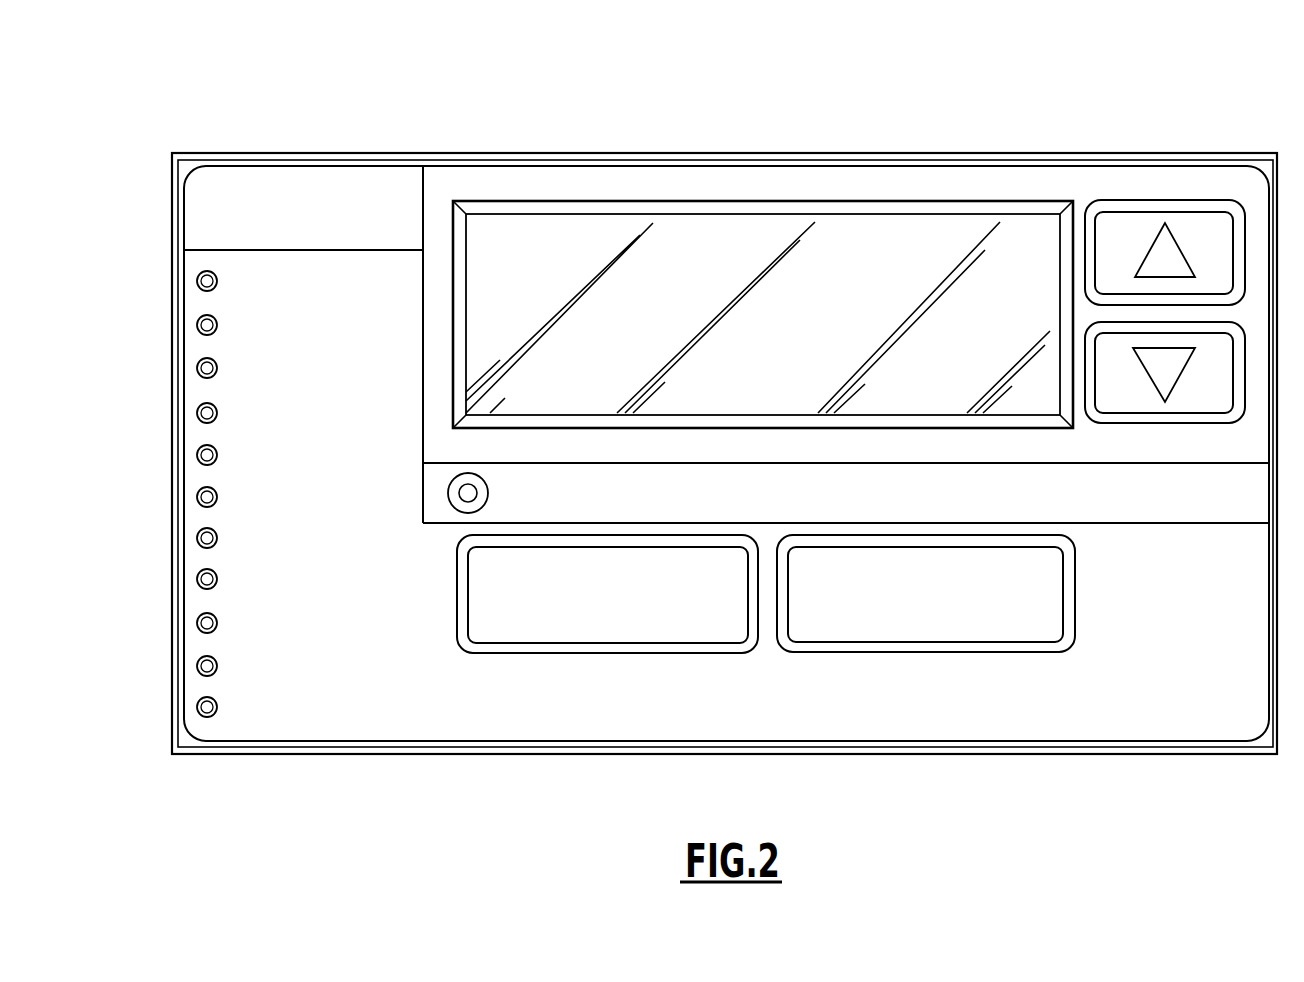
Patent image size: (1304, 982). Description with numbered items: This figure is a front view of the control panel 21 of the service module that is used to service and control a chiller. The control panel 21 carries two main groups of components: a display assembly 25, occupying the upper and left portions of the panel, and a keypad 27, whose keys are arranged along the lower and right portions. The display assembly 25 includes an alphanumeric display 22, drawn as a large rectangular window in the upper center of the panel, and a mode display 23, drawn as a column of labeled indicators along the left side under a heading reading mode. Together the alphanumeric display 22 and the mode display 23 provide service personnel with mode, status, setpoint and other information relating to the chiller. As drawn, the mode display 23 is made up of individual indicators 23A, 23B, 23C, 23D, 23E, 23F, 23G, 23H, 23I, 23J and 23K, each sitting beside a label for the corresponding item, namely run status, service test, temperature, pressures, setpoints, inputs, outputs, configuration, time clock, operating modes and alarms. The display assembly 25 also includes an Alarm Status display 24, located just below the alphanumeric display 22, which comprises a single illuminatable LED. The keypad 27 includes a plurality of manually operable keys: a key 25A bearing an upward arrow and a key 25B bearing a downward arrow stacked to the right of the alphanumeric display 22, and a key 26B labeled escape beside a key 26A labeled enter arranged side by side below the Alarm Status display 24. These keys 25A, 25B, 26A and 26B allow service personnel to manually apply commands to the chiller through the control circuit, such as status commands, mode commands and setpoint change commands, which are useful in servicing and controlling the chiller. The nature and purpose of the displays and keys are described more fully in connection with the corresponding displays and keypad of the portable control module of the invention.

The control panel 21 is at (837, 149).
The alphanumeric display 22 is at (522, 246).
The mode display 23 is at (137, 214).
The run status indicator 23A is at (197, 281).
The service test indicator 23B is at (197, 325).
The temperature indicator 23C is at (197, 368).
The pressures indicator 23D is at (197, 413).
The setpoints indicator 23E is at (197, 455).
The inputs indicator 23F is at (197, 497).
The outputs indicator 23G is at (197, 538).
The configuration indicator 23H is at (197, 579).
The time clock indicator 23I is at (197, 623).
The operating modes indicator 23J is at (197, 666).
The alarms indicator 23K is at (197, 707).
The Alarm Status display 24 is at (472, 474).
The display assembly 25 is at (498, 113).
The manually operable key 25A is at (1175, 277).
The manually operable key 25B is at (1158, 392).
The manually operable key 26A is at (997, 620).
The manually operable key 26B is at (732, 622).
The keypad 27 is at (735, 688).